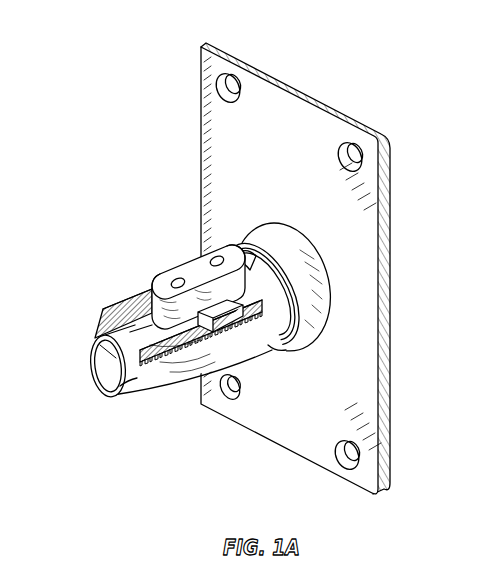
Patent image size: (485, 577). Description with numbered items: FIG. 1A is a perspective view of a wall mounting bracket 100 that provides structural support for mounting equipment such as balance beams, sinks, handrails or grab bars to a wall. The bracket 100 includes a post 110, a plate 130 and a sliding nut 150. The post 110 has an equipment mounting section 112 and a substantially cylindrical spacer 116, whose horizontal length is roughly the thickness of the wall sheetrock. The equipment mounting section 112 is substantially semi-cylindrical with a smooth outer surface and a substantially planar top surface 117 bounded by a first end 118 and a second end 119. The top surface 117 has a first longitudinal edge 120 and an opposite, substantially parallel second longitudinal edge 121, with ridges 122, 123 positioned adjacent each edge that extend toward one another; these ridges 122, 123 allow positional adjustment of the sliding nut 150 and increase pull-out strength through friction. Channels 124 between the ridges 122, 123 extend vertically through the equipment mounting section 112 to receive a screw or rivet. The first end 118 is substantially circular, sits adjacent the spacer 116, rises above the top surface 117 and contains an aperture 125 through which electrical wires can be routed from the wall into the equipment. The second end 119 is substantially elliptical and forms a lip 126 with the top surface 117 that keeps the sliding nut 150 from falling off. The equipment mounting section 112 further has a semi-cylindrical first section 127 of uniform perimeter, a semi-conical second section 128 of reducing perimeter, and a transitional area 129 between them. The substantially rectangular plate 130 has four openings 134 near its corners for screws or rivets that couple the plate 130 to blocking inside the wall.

The wall mounting bracket 100 is at (113, 48).
The post 110 is at (137, 387).
The equipment mounting section 112 is at (152, 392).
The spacer 116 is at (287, 237).
The top surface 117 is at (147, 302).
The first end 118 is at (250, 248).
The second end 119 is at (97, 360).
The first longitudinal edge 120 is at (130, 307).
The second longitudinal edge 121 is at (157, 377).
The ridges 122 is at (120, 317).
The ridges 123 is at (183, 362).
The channels 124 is at (108, 372).
The aperture 125 is at (263, 258).
The lip 126 is at (97, 351).
The first section 127 is at (279, 347).
The second section 128 is at (137, 383).
The transitional area 129 is at (243, 376).
The plate 130 is at (371, 190).
The openings 134 is at (352, 143).
The sliding nut 150 is at (193, 250).